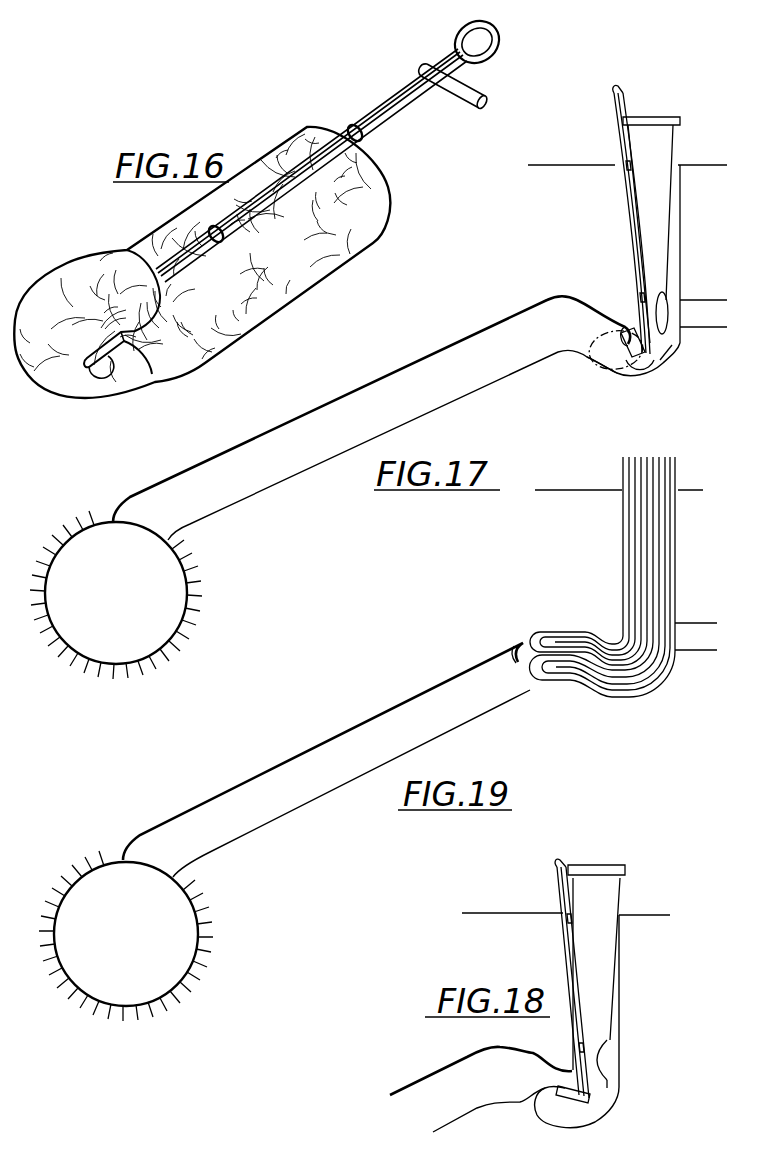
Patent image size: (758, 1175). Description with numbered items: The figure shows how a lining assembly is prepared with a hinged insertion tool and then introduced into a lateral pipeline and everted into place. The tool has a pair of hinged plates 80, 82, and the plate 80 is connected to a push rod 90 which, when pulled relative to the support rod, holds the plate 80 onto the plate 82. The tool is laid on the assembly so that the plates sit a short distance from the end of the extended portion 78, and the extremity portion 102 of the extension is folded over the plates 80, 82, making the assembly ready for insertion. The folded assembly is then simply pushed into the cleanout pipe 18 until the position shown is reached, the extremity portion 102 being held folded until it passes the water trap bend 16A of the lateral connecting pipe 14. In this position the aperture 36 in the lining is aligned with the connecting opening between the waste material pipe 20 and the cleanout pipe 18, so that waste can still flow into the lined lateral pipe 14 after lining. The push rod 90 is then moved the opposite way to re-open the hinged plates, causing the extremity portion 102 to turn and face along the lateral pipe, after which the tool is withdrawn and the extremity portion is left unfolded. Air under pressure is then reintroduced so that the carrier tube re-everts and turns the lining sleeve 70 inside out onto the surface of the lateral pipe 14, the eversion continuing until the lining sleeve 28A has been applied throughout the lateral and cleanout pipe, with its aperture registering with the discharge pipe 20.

In FIG. 17, the lateral connecting pipe 14 is at (385, 378).
In FIG. 19, the lateral connecting pipe 14 is at (302, 754).
In FIG. 17, the cleanout pipe 18 is at (627, 220).
In FIG. 17, the waste material pipe 20 is at (690, 313).
In FIG. 17, the aperture 36 is at (657, 287).
In FIG. 17, the extended portion 78 is at (663, 213).
In FIG. 17, the plate 80 is at (633, 370).
In FIG. 17, the plate 82 is at (653, 362).
In FIG. 17, the push rod 90 is at (623, 120).
In FIG. 16, the extremity portion 102 is at (58, 268).
In FIG. 17, the extremity portion 102 is at (625, 327).
In FIG. 17, the water trap bend 16A is at (600, 373).
In FIG. 19, the lining sleeve 28A is at (512, 652).
In FIG. 19, the lining sleeve 70 is at (555, 641).